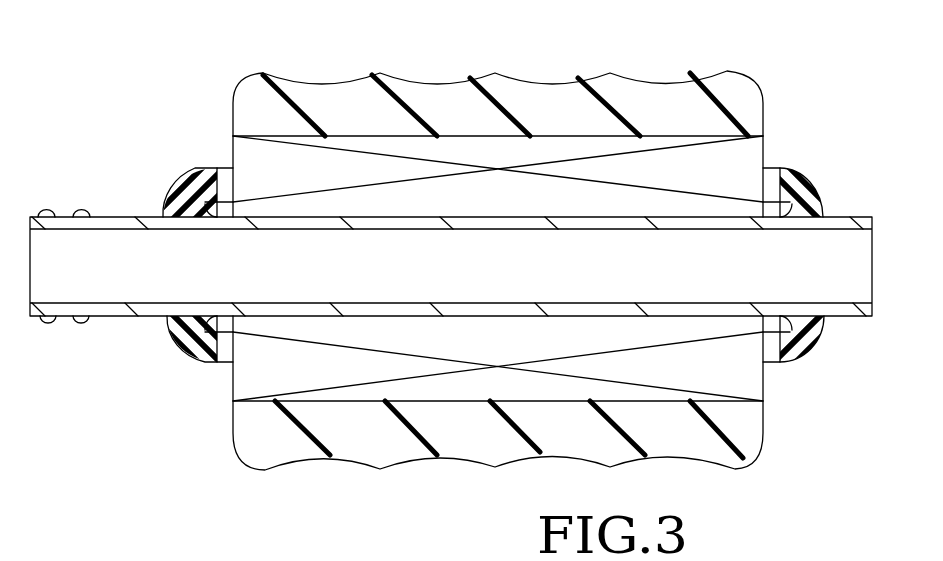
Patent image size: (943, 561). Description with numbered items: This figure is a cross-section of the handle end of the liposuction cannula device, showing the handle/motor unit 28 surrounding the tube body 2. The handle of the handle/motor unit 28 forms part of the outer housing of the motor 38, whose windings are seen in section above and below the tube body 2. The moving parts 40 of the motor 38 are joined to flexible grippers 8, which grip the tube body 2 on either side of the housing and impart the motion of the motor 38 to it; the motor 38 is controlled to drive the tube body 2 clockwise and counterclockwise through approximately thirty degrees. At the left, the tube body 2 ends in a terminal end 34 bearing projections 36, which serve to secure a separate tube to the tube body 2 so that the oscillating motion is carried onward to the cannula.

The tube body 2 is at (845, 217).
The flexible grippers 8 is at (172, 196).
The handle/motor unit 28 is at (525, 80).
The terminal end 34 is at (118, 318).
The projections 36 is at (74, 212).
The motor 38 is at (423, 170).
The moving parts 40 is at (222, 168).